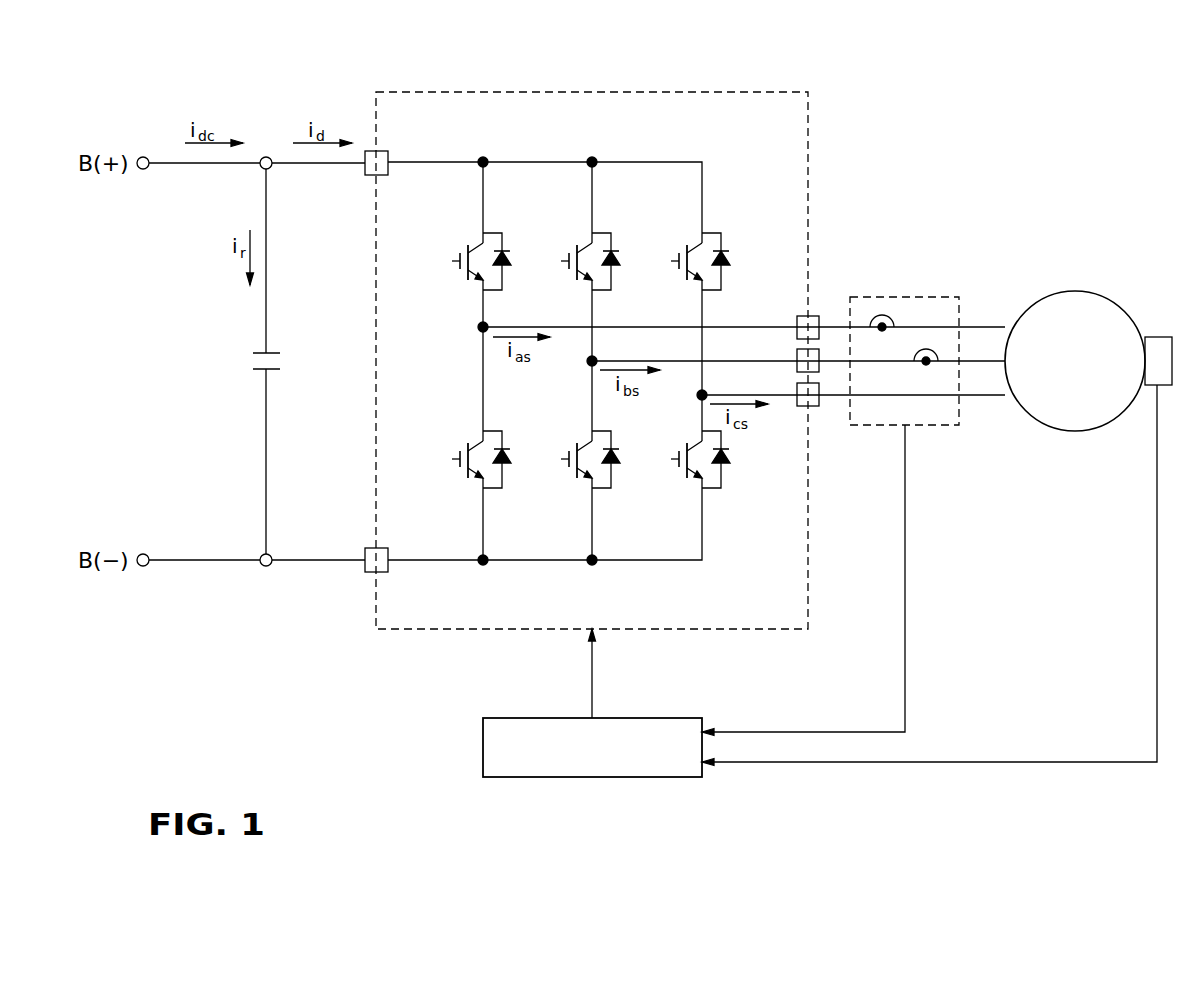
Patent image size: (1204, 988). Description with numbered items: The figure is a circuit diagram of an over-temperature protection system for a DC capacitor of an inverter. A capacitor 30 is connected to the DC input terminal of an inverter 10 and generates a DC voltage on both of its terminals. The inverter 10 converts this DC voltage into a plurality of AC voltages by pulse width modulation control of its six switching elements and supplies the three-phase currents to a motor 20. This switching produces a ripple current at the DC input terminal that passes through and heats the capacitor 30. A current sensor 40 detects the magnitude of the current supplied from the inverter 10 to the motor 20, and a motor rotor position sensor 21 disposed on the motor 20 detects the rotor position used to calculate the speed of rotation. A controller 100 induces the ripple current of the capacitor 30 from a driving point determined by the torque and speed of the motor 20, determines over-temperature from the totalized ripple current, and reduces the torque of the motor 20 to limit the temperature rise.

The inverter 10 is at (620, 92).
The motor 20 is at (1075, 290).
The motor rotor position sensor 21 is at (1157, 337).
The capacitor 30 is at (253, 361).
The current sensor 40 is at (905, 297).
The controller 100 is at (483, 745).